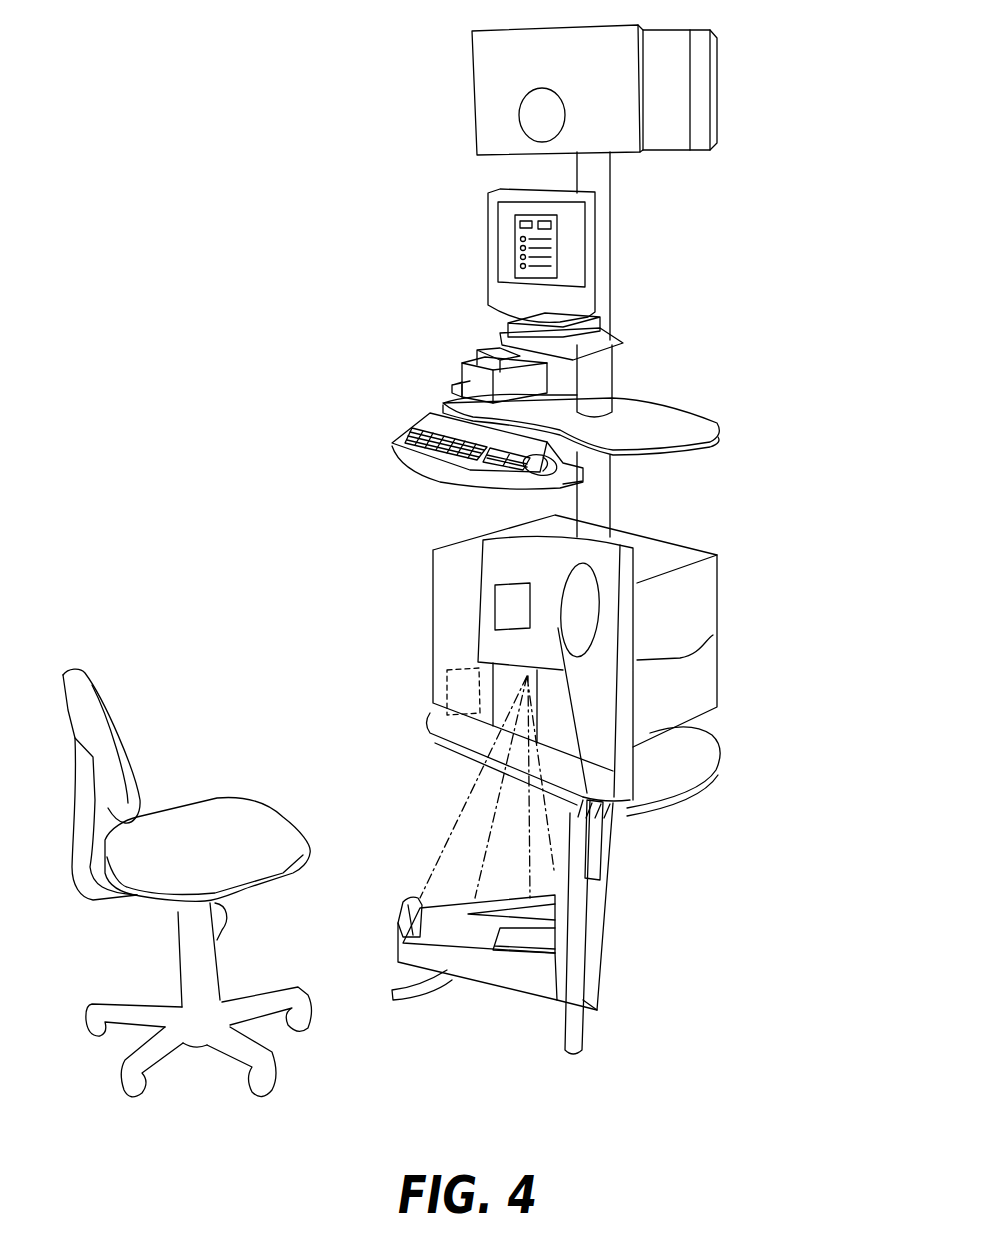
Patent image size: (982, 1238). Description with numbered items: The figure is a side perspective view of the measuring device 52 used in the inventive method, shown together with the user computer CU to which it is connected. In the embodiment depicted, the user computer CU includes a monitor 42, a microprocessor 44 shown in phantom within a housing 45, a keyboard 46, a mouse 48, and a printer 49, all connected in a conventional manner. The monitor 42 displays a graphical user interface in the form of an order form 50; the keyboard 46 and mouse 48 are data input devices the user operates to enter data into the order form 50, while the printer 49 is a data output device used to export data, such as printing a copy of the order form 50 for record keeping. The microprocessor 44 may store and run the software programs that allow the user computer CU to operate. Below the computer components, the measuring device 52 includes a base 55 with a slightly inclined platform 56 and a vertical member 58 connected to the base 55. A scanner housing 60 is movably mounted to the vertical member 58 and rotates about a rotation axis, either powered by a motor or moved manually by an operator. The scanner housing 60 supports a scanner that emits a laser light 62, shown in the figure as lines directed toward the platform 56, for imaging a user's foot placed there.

The user computer CU is at (720, 65).
The monitor 42 is at (588, 273).
The order form 50 is at (555, 238).
The printer 49 is at (462, 368).
The keyboard 46 is at (396, 443).
The mouse 48 is at (548, 472).
The housing 45 is at (428, 648).
The microprocessor 44 is at (455, 685).
The scanner housing 60 is at (713, 635).
The measuring device 52 is at (686, 750).
The laser light 62 is at (465, 862).
The vertical member 58 is at (608, 907).
The base 55 is at (519, 1008).
The platform 56 is at (447, 940).